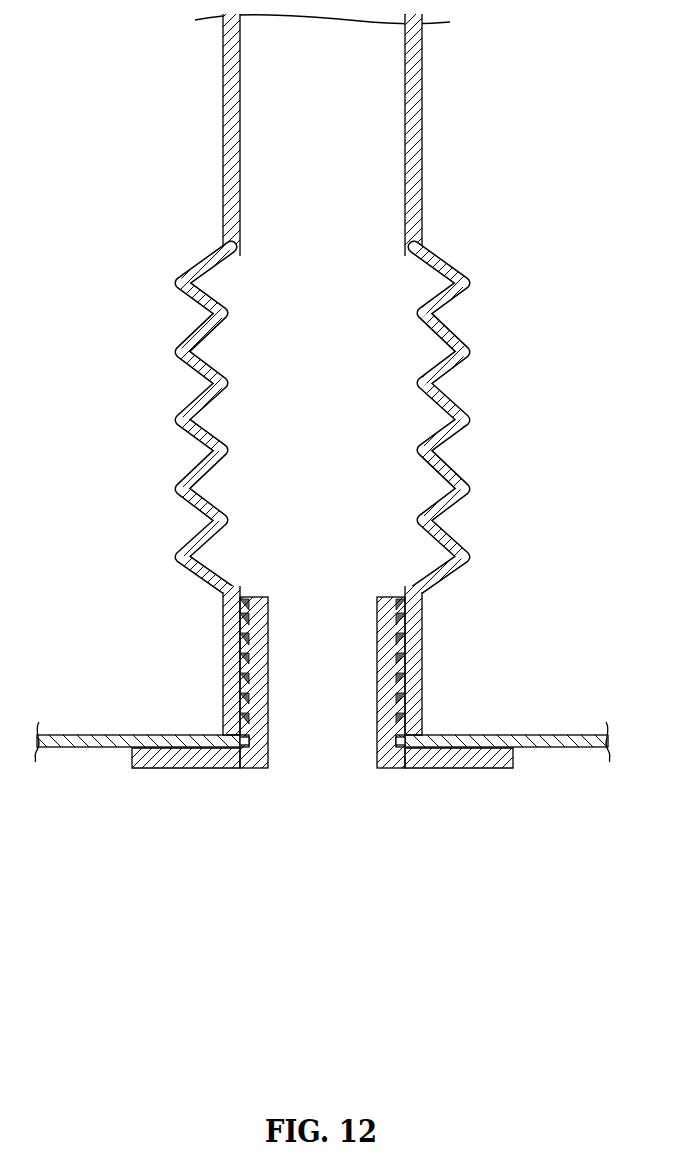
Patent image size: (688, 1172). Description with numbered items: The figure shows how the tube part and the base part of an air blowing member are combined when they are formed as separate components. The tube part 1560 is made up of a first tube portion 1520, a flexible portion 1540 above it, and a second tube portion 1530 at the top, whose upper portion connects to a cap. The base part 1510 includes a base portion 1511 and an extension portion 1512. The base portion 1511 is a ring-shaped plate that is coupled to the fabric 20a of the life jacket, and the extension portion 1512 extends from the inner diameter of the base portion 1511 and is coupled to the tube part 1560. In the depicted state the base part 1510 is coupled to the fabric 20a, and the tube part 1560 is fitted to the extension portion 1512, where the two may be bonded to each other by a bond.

The tube part 1560 is at (245, 374).
The second tube portion 1530 is at (223, 140).
The flexible portion 1540 is at (178, 422).
The first tube portion 1520 is at (257, 660).
The base part 1510 is at (322, 736).
The extension portion 1512 is at (268, 717).
The base portion 1511 is at (268, 836).
The fabric 20a is at (558, 747).